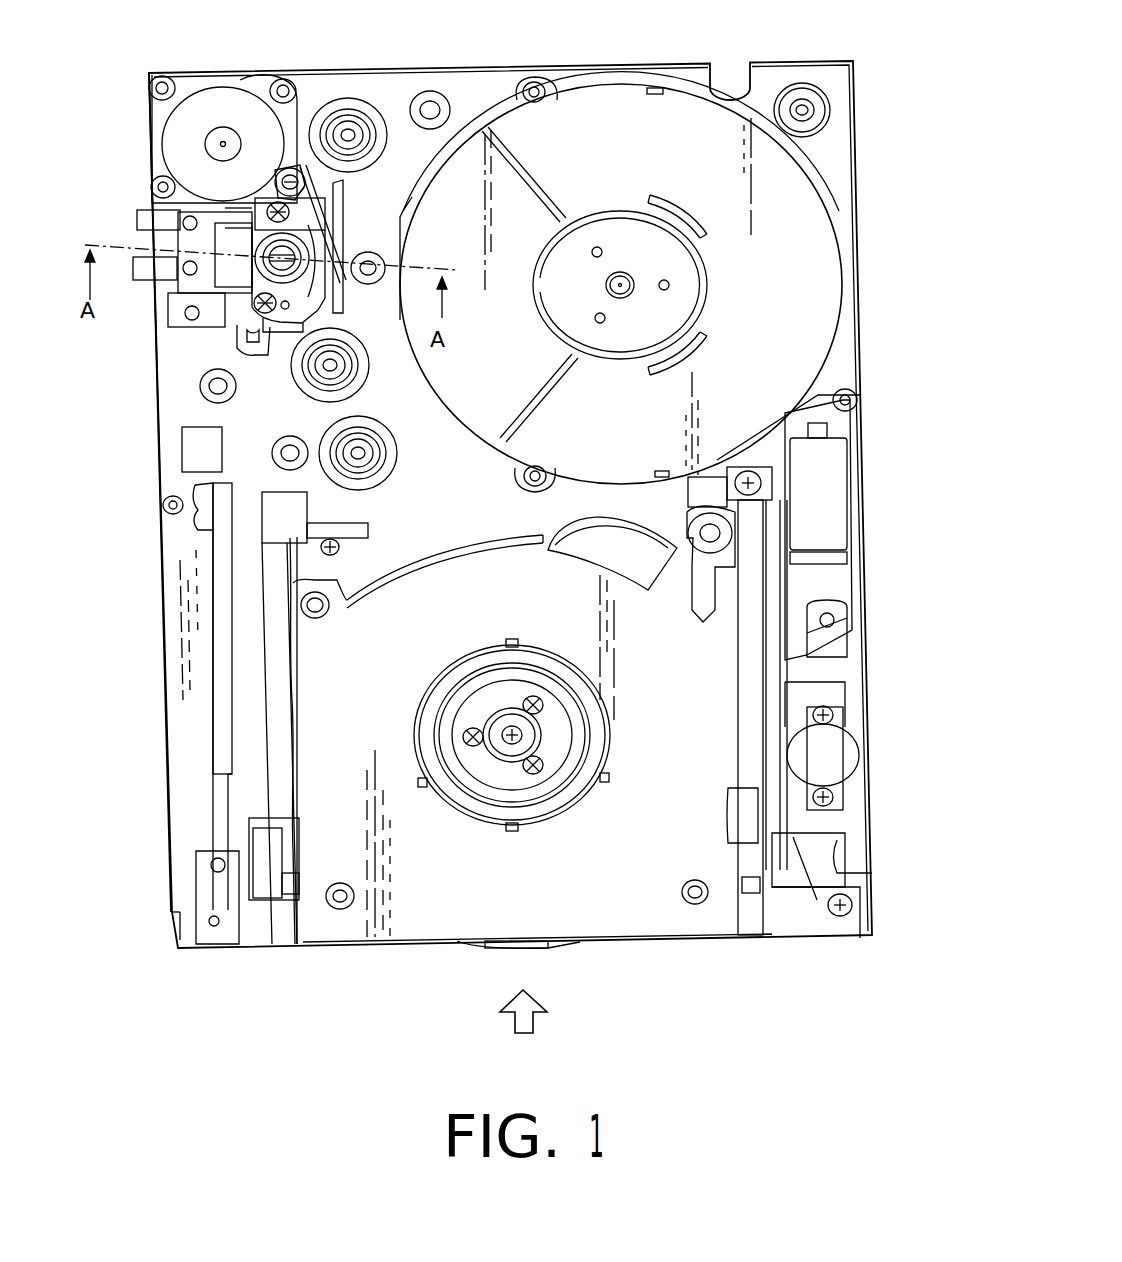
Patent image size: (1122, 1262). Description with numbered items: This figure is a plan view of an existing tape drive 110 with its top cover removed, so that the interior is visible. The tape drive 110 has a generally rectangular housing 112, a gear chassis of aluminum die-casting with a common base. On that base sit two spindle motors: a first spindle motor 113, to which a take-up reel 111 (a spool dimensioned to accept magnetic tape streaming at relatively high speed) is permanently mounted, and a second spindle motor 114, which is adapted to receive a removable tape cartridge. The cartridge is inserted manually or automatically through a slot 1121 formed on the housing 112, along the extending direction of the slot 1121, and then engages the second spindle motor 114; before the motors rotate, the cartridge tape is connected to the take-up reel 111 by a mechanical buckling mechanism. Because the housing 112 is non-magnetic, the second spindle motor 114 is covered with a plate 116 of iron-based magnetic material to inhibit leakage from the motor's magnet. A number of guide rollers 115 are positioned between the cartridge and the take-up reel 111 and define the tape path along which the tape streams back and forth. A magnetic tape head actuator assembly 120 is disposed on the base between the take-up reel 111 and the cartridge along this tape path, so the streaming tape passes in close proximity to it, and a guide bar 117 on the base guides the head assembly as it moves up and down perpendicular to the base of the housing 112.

The tape drive 110 is at (168, 942).
The take-up reel 111 is at (800, 220).
The housing 112 is at (165, 748).
The first spindle motor 113 is at (682, 295).
The second spindle motor 114 is at (548, 753).
The rollers 115 is at (355, 107).
The plate 116 is at (405, 915).
The guide bar 117 is at (250, 350).
The magnetic tape head actuator assembly 120 is at (228, 340).
The slot 1121 is at (522, 1030).